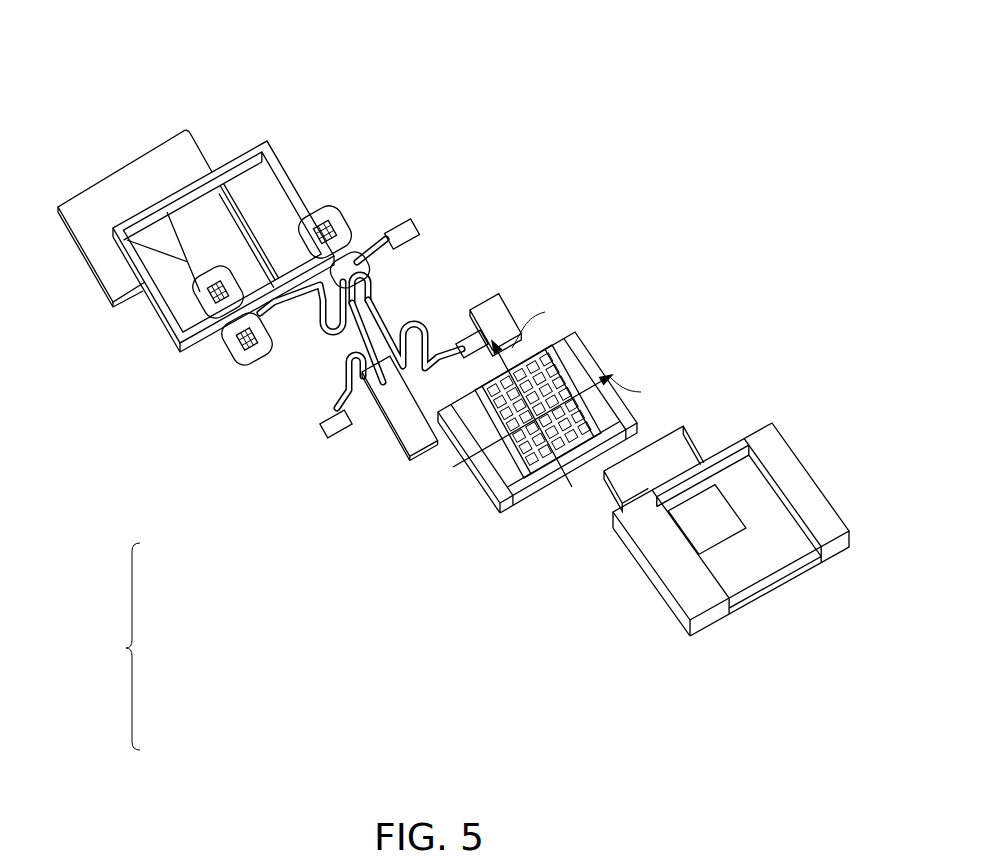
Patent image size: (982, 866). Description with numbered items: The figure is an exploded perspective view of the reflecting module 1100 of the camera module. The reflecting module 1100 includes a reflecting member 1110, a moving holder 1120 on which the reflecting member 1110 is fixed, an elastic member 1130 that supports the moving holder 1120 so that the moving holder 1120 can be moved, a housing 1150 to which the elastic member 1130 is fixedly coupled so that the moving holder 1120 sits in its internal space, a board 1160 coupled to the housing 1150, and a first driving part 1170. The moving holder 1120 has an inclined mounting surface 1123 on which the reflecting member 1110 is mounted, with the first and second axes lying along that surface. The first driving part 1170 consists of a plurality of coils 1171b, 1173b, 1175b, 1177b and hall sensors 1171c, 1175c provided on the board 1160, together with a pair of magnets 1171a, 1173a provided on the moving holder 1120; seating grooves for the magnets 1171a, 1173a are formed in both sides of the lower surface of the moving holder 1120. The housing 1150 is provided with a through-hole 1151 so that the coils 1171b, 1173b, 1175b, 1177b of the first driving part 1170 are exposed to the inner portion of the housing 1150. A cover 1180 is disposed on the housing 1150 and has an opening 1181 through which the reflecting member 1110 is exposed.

The reflecting module 1100 is at (395, 24).
The reflecting member 1110 is at (644, 490).
The moving holder 1120 is at (473, 487).
The mounting surface 1123 is at (590, 377).
The elastic member 1130 is at (330, 420).
The housing 1150 is at (223, 199).
The through-hole 1151 is at (252, 190).
The board 1160 is at (172, 163).
The first driving part 1170 is at (139, 649).
The magnet 1171a is at (397, 443).
The coil 1171b is at (141, 334).
The hall sensor 1171c is at (200, 294).
The magnet 1173a is at (497, 307).
The coil 1173b is at (332, 216).
The coil 1175b is at (242, 360).
The hall sensor 1175c is at (262, 342).
The coil 1177b is at (357, 245).
The cover 1180 is at (701, 551).
The opening 1181 is at (757, 560).